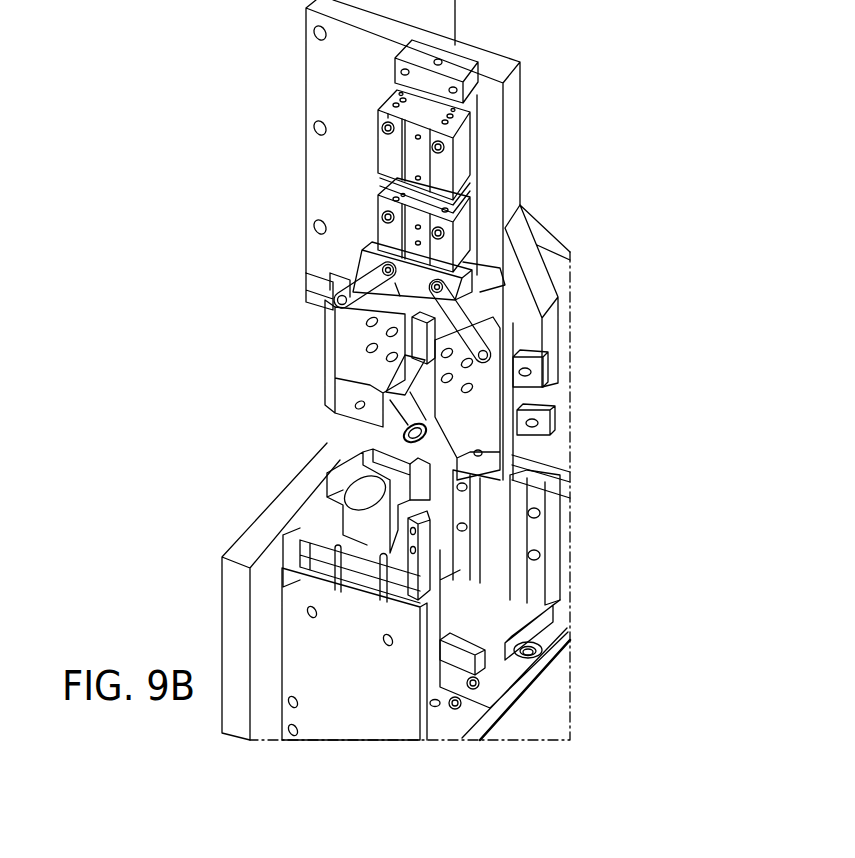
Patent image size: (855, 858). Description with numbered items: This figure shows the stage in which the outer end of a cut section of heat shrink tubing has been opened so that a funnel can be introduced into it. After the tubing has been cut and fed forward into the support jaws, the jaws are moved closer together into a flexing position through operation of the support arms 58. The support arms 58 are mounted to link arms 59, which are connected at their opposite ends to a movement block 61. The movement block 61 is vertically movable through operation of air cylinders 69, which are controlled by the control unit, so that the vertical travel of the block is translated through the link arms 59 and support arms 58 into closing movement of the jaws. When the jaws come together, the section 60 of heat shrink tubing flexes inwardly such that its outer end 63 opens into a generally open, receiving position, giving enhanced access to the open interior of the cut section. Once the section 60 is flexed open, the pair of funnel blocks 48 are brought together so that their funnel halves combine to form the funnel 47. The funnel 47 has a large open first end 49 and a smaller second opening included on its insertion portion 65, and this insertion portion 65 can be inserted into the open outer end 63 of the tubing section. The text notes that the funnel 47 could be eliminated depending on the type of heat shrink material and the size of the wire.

The funnel 47 is at (377, 527).
The funnel blocks 48 is at (330, 525).
The open first end 49 is at (355, 492).
The support arms 58 is at (350, 373).
The link arms 59 is at (365, 255).
The section of heat shrink tubing 60 is at (395, 386).
The movement block 61 is at (423, 278).
The outer end 63 is at (405, 443).
The insertion portion 65 is at (425, 462).
The air cylinders 69 is at (462, 160).